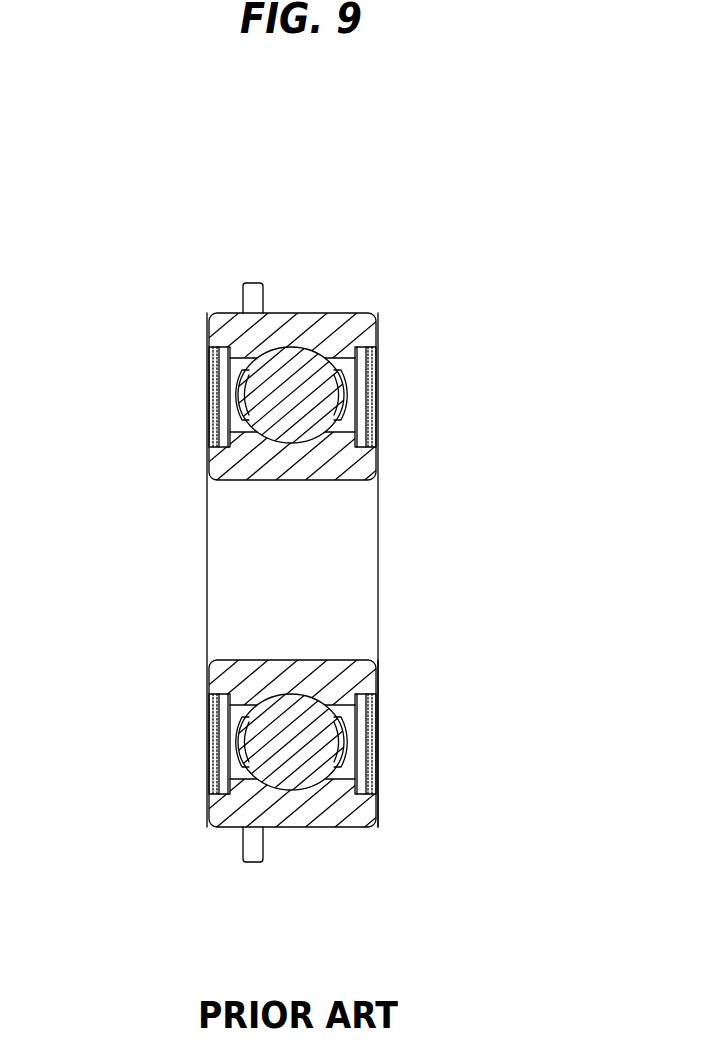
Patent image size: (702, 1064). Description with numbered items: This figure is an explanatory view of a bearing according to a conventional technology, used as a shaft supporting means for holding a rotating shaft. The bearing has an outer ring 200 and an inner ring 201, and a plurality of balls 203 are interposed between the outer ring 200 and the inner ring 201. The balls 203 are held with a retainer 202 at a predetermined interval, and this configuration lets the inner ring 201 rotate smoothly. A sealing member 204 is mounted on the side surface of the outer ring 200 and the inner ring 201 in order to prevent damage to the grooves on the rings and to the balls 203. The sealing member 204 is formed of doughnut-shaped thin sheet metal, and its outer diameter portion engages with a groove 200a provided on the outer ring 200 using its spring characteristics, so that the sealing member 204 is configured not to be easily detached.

The outer ring 200 is at (309, 318).
The groove 200a is at (376, 779).
The inner ring 201 is at (327, 478).
The retainer 202 is at (240, 386).
The ball 203 is at (308, 358).
The sealing member 204 is at (378, 375).